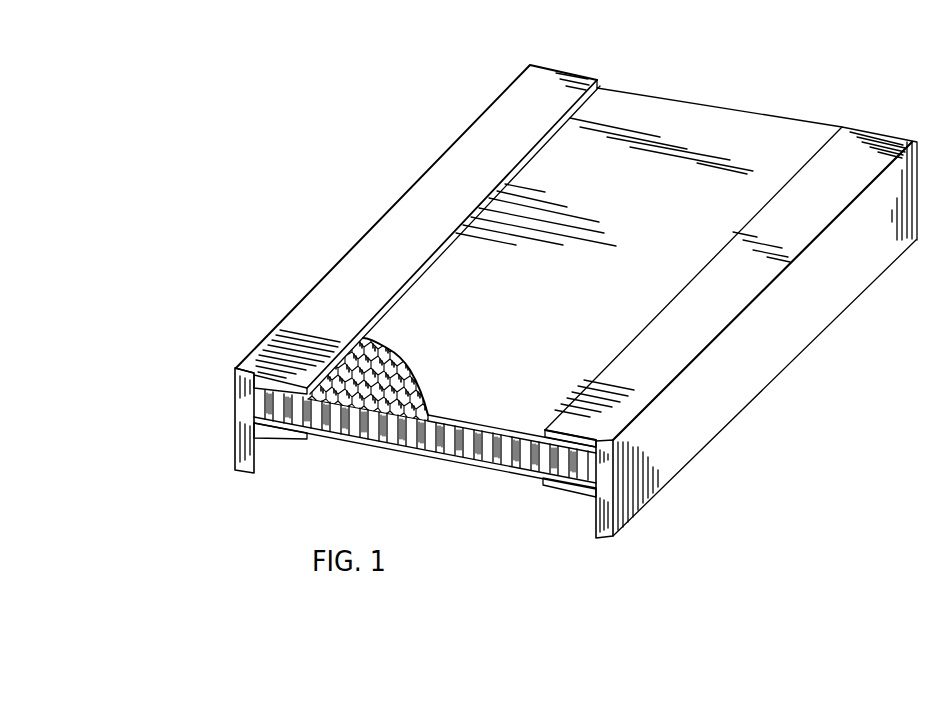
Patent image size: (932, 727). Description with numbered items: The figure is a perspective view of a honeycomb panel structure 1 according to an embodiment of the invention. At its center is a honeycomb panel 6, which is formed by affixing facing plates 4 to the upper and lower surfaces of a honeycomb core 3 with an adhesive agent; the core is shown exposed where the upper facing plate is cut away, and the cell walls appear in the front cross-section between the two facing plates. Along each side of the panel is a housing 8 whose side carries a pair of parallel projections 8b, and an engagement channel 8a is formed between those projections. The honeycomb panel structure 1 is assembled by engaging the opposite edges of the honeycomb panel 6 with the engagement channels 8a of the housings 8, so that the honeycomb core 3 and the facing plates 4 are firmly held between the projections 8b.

The honeycomb panel structure 1 is at (756, 93).
The honeycomb core 3 is at (337, 434).
The facing plates 4 is at (400, 452).
The honeycomb panel 6 is at (450, 451).
The housings 8 is at (314, 296).
The engagement channels 8a is at (254, 420).
The parallel projections 8b is at (252, 371).